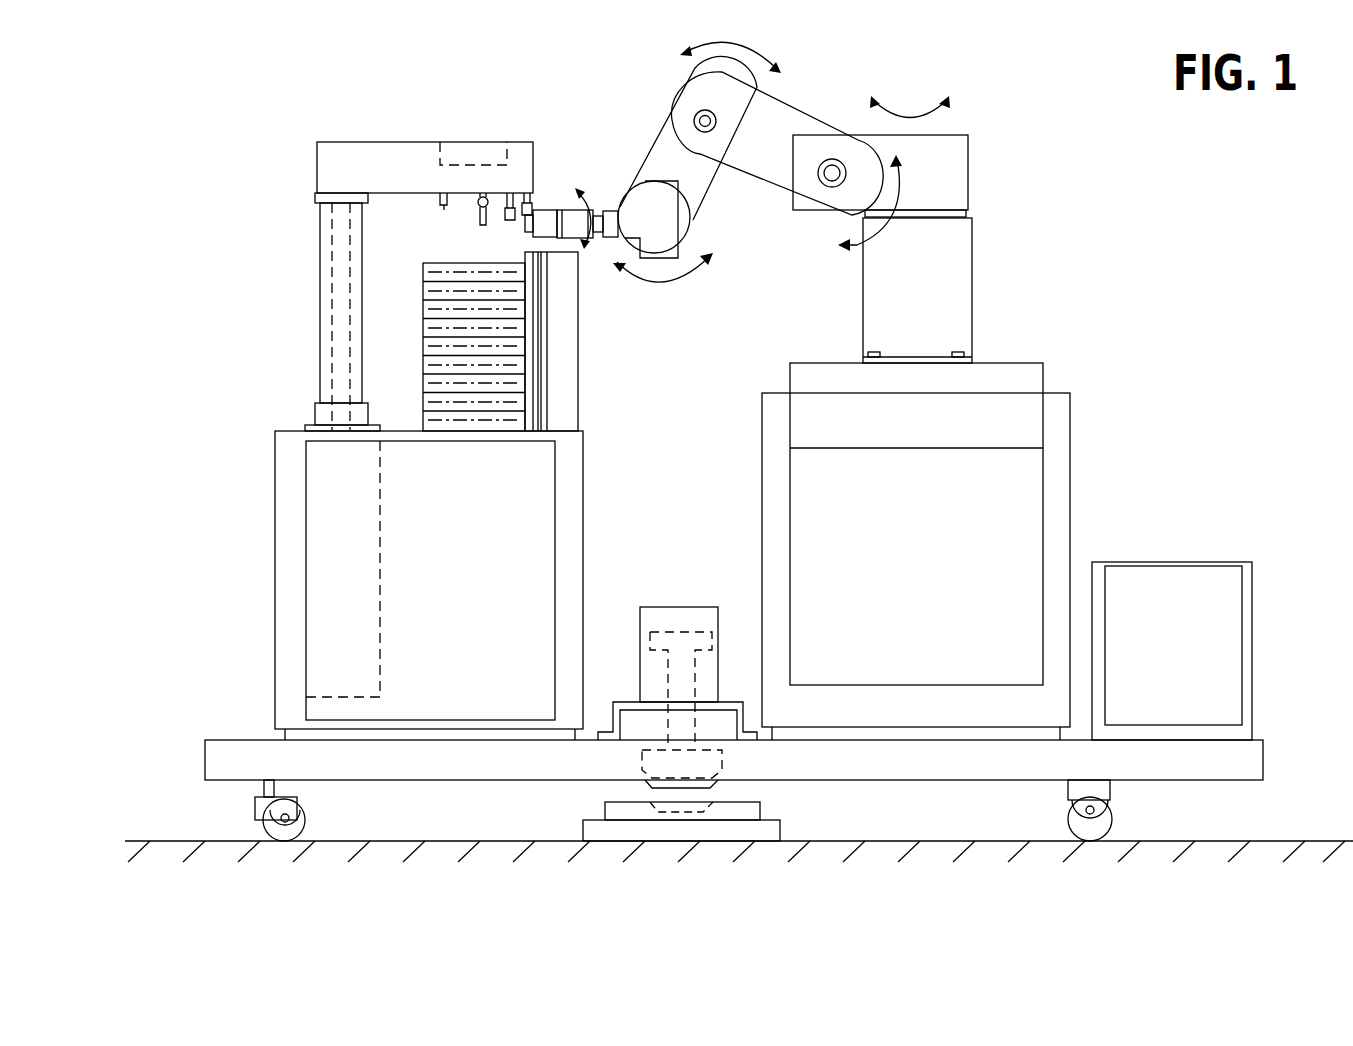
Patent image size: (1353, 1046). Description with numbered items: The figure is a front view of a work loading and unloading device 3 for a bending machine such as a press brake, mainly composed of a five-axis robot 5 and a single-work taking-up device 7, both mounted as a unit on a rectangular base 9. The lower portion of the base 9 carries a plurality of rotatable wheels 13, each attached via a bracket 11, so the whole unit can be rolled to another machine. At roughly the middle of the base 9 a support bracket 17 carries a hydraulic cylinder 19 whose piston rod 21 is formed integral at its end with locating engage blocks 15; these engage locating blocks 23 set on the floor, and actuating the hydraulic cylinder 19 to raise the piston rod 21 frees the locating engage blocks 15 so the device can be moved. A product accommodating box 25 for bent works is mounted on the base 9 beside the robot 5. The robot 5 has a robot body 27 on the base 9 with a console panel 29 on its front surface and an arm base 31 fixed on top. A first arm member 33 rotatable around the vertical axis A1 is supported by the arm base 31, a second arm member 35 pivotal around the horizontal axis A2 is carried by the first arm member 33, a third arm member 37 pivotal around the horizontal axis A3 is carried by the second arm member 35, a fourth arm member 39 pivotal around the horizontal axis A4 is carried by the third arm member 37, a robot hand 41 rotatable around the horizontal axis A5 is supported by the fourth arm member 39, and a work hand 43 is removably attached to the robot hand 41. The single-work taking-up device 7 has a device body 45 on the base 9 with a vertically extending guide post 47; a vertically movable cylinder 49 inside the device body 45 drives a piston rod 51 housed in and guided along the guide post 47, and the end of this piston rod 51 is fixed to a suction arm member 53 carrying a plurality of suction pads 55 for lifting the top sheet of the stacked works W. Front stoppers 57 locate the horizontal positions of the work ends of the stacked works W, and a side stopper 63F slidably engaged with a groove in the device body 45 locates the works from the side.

The work loading and unloading device 3 is at (839, 187).
The 5-axis robot 5 is at (956, 475).
The single-work taking-up device 7 is at (412, 404).
The rectangular base 9 is at (1263, 762).
The bracket 11 is at (255, 806).
The rotatable wheel 13 is at (300, 812).
The locating engage block 15 is at (722, 765).
The support bracket 17 is at (625, 702).
The hydraulic cylinder 19 is at (672, 606).
The piston rod 21 is at (700, 682).
The locating block 23 is at (760, 810).
The product accommodating box 25 is at (1255, 625).
The robot body 27 is at (1072, 490).
The console panel 29 is at (930, 599).
The arm base 31 is at (975, 250).
The first arm member 33 is at (968, 158).
The second arm member 35 is at (805, 120).
The third arm member 37 is at (707, 192).
The fourth arm member 39 is at (668, 222).
The robot hand 41 is at (583, 247).
The work hand 43 is at (540, 210).
The device body 45 is at (275, 578).
The guide post 47 is at (320, 257).
The vertically movable cylinder 49 is at (370, 595).
The piston rod 51 is at (320, 316).
The suction arm member 53 is at (393, 148).
The suction pad 55 is at (508, 226).
The front stopper 57 is at (578, 345).
The side stopper 63F is at (540, 383).
The work W is at (423, 337).
The vertical axis A1 is at (923, 114).
The horizontal axis A2 is at (881, 205).
The horizontal axis A3 is at (730, 42).
The horizontal axis A4 is at (663, 285).
The horizontal axis A5 is at (584, 203).